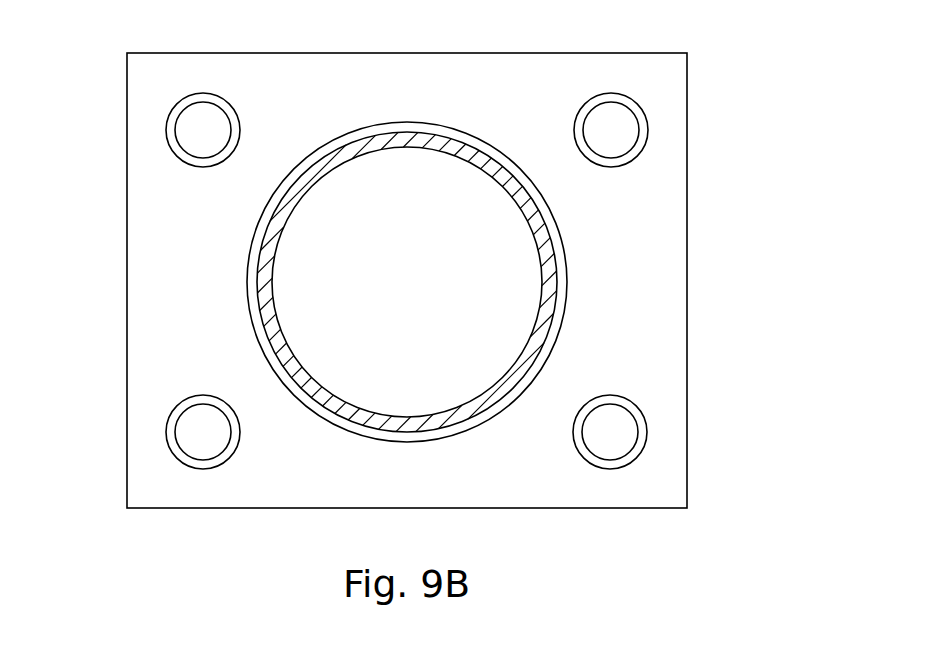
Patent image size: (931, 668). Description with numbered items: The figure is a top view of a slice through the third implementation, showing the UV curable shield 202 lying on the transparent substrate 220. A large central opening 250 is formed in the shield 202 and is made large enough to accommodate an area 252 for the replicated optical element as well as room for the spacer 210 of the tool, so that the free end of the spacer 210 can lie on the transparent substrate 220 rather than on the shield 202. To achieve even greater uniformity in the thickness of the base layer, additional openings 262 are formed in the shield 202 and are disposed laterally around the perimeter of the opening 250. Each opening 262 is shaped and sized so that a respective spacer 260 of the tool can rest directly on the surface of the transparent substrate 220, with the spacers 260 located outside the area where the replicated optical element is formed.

The UV curable shield 202 is at (687, 222).
The spacer 210 is at (527, 345).
The transparent substrate 220 is at (552, 223).
The opening 250 is at (512, 408).
The area for the replicated optical element 252 is at (450, 377).
The spacer 260 is at (203, 130).
The additional opening 262 is at (188, 102).